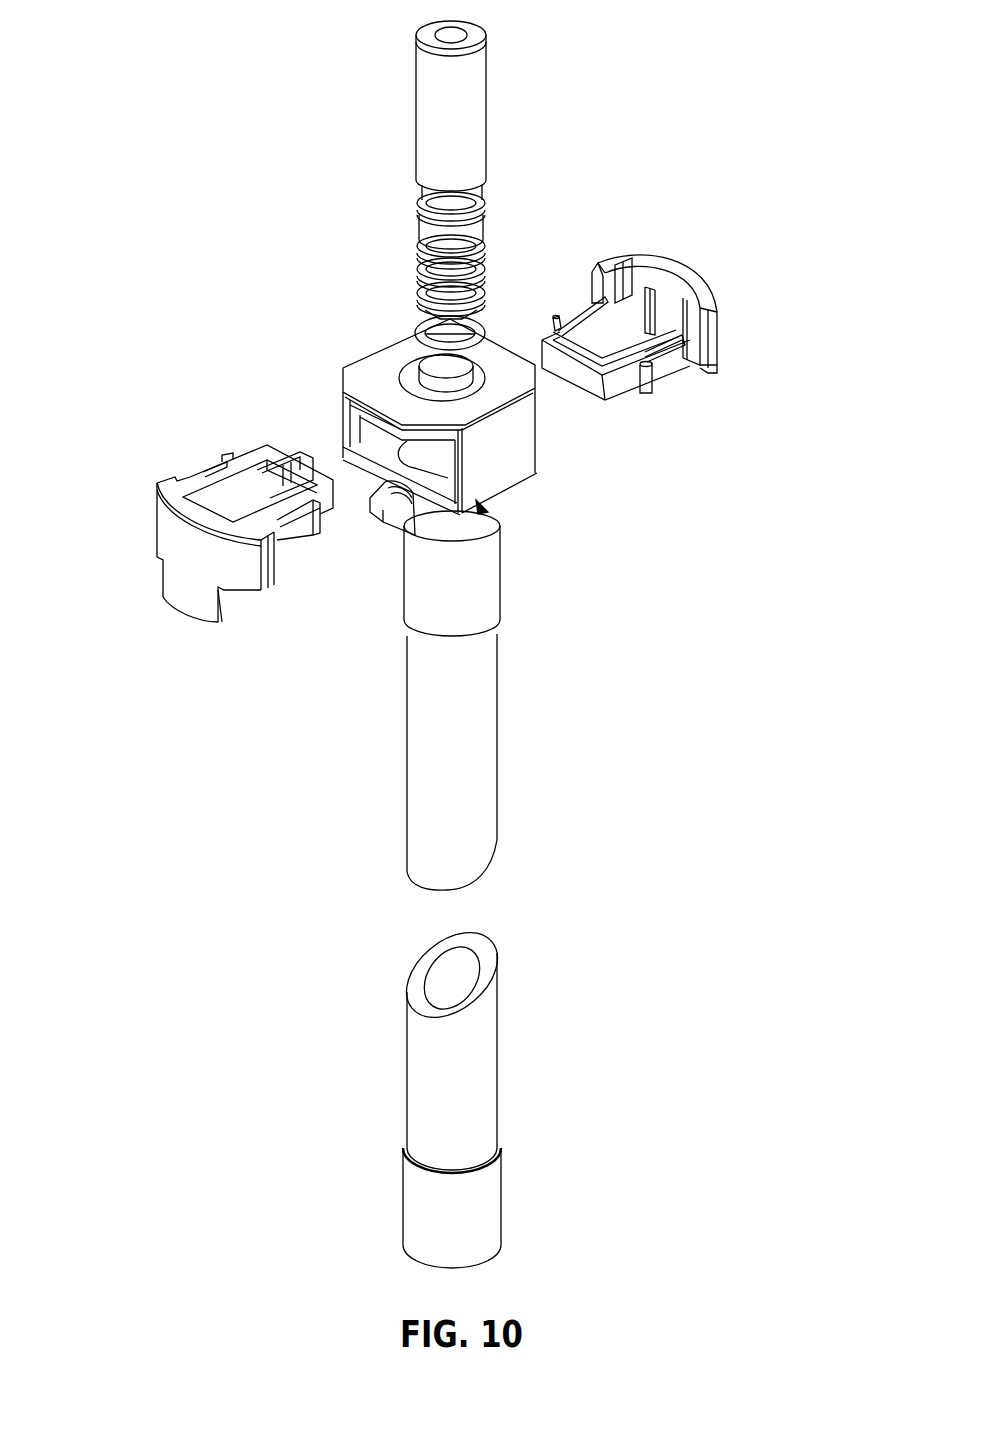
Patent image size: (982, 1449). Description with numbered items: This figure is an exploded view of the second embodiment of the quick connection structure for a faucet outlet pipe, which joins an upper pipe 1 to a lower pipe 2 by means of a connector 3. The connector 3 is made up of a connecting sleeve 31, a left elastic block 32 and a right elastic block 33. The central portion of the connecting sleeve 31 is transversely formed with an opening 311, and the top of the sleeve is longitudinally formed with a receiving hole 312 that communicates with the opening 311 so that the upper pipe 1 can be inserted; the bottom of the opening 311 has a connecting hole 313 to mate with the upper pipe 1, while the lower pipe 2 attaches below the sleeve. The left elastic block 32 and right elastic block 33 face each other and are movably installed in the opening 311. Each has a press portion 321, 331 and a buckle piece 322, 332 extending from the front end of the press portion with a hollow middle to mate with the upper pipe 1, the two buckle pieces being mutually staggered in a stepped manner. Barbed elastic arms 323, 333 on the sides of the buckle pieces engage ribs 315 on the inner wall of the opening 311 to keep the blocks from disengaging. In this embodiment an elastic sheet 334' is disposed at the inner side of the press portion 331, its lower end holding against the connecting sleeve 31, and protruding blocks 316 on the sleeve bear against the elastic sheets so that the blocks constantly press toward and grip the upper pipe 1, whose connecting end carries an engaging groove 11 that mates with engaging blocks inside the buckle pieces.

The upper pipe 1 is at (470, 148).
The engaging groove 11 is at (487, 244).
The lower pipe 2 is at (485, 1108).
The connector 3 is at (684, 152).
The connecting sleeve 31 is at (472, 586).
The opening 311 is at (445, 481).
The receiving hole 312 is at (468, 372).
The connecting hole 313 is at (445, 457).
The ribs 315 is at (408, 373).
The protruding blocks 316 is at (392, 516).
The left elastic block 32 is at (189, 544).
The press portion 321 is at (175, 540).
The buckle piece 322 is at (248, 527).
The elastic arms 323 is at (302, 527).
The right elastic block 33 is at (685, 323).
The press portion 331 is at (717, 295).
The buckle piece 332 is at (625, 382).
The elastic arms 333 is at (673, 370).
The elastic sheet 334' is at (700, 280).